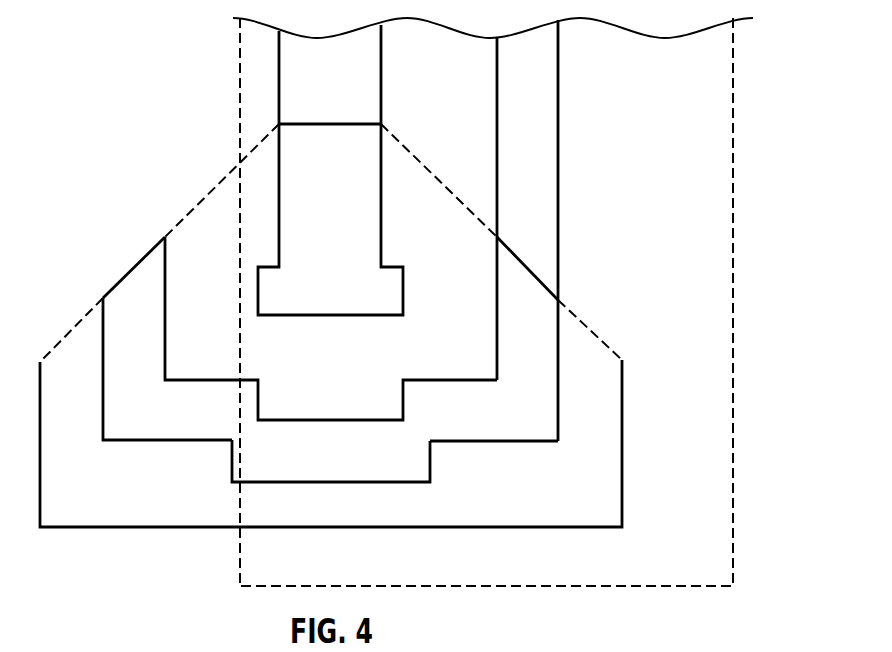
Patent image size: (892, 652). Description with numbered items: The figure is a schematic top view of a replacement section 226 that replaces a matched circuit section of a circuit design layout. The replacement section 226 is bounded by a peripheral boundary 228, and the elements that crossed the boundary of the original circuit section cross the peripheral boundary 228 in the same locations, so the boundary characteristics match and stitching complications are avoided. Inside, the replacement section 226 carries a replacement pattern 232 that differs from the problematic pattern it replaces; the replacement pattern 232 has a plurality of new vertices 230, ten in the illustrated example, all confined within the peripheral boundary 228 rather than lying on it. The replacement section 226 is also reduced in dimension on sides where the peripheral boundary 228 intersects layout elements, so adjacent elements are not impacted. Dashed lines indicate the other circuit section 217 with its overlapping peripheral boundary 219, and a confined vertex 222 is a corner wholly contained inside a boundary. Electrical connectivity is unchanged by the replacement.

The another circuit section 217 is at (735, 107).
The peripheral boundary 219 is at (240, 105).
The confined vertex 222 is at (105, 442).
The replacement section 226 is at (624, 445).
The peripheral boundary 228 is at (375, 333).
The new vertex 230 is at (260, 380).
The replacement pattern 232 is at (447, 457).